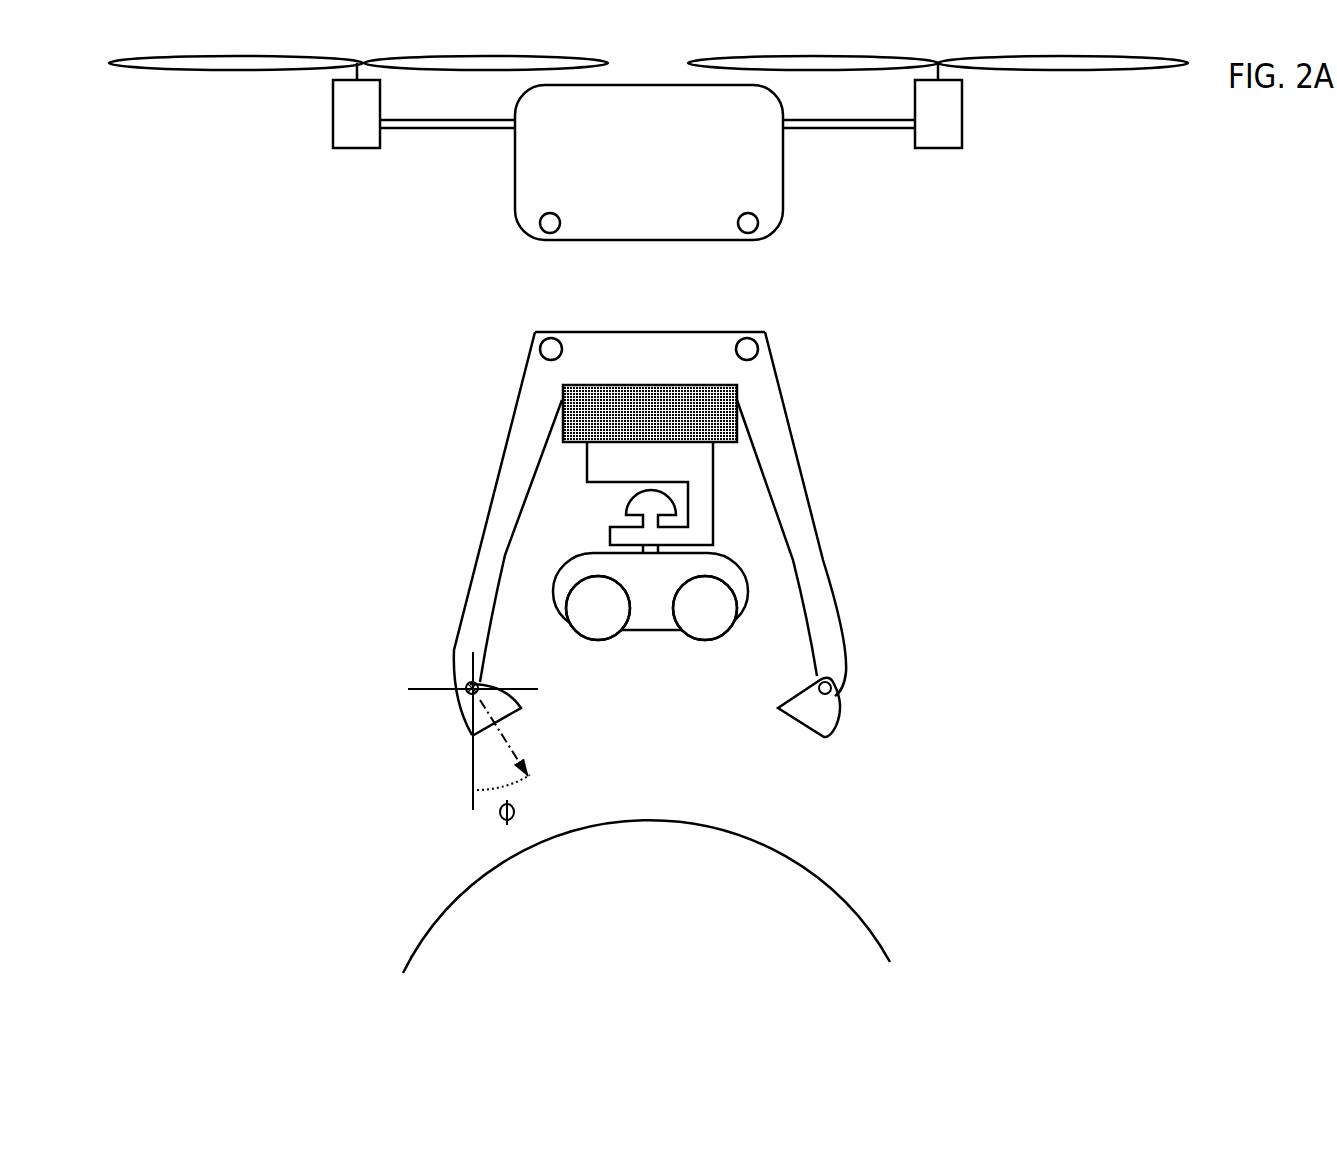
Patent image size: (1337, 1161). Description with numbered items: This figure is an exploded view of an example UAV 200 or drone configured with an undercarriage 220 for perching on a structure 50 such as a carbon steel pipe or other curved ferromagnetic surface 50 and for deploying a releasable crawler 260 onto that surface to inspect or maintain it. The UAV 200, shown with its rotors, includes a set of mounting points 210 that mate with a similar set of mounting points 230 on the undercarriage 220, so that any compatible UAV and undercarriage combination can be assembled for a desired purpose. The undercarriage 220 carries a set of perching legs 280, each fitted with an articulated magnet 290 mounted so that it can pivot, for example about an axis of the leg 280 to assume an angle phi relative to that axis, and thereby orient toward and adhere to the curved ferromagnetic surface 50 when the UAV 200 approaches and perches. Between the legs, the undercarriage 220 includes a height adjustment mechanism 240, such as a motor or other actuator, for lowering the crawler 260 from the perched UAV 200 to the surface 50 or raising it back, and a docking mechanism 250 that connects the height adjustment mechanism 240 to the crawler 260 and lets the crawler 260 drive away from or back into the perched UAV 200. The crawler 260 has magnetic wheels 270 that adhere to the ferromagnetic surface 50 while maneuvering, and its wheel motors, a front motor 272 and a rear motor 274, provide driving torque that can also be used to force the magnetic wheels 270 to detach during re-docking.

The UAV 200 is at (447, 183).
The mounting points 210 is at (750, 223).
The undercarriage 220 is at (430, 382).
The mounting points 230 is at (749, 350).
The height adjustment mechanism 240 is at (587, 418).
The docking mechanism 250 is at (692, 462).
The crawler 260 is at (540, 608).
The magnetic wheels 270 is at (712, 601).
The front motor 272 is at (603, 608).
The rear motor 274 is at (703, 618).
The perching legs 280 is at (495, 540).
The articulated magnet 290 is at (838, 713).
The curved ferromagnetic surface 50 is at (445, 882).